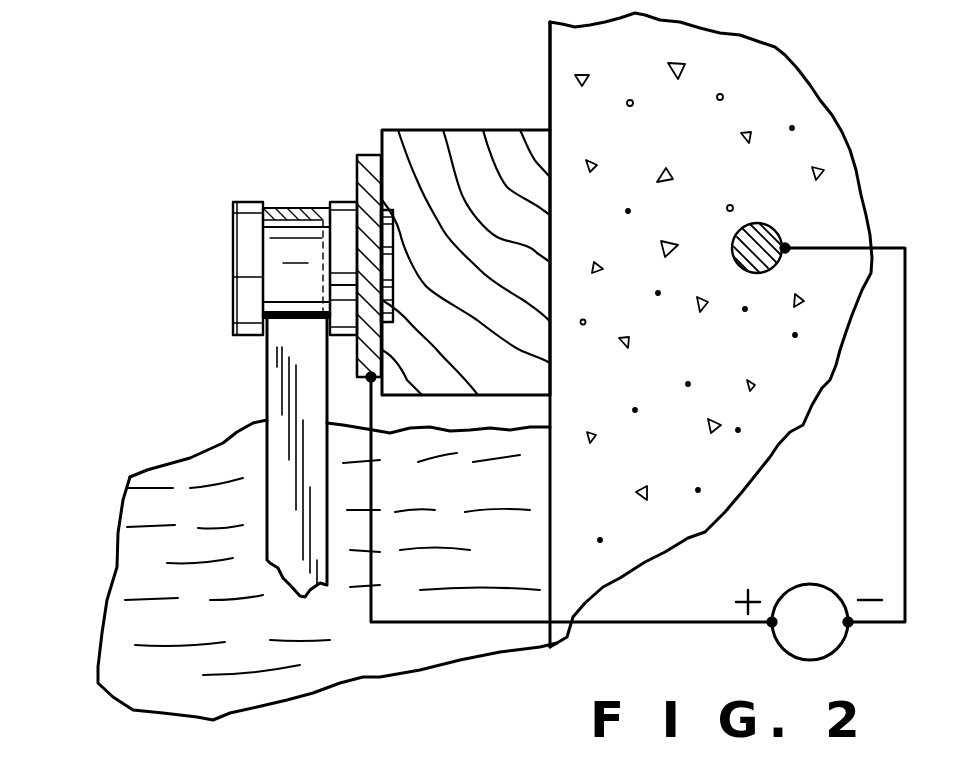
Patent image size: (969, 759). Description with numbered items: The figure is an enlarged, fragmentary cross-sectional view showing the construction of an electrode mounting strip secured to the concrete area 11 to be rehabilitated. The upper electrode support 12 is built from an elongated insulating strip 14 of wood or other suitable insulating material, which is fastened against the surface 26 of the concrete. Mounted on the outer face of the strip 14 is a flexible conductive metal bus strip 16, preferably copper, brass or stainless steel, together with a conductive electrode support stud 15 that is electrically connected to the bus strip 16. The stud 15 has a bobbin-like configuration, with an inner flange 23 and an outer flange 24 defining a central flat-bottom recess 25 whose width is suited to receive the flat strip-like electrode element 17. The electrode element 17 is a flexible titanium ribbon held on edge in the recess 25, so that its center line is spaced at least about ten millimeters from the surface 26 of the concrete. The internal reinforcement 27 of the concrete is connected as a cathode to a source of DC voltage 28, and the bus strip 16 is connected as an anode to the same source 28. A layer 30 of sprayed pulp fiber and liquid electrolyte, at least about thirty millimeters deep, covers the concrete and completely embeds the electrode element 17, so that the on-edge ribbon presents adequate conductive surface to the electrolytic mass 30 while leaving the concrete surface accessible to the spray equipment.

The area to be rehabilitated 11 is at (778, 112).
The upper electrode support 12 is at (417, 127).
The insulating strip 14 is at (475, 148).
The electrode support stud 15 is at (247, 233).
The conductive bus strip 16 is at (357, 155).
The electrode element 17 is at (285, 388).
The inner flange 23 is at (347, 290).
The outer flange 24 is at (250, 262).
The central flat-bottom recess 25 is at (295, 237).
The surface of the concrete 26 is at (550, 45).
The internal reinforcement 27 is at (770, 232).
The source of DC voltage 28 is at (815, 597).
The layer of pulp fiber and liquid electrolyte 30 is at (133, 548).